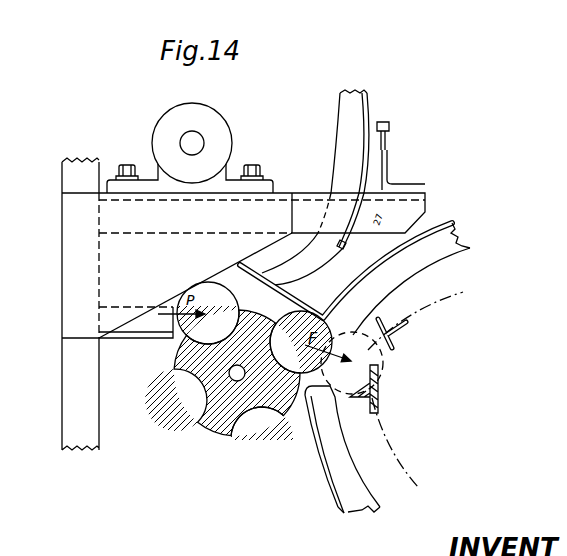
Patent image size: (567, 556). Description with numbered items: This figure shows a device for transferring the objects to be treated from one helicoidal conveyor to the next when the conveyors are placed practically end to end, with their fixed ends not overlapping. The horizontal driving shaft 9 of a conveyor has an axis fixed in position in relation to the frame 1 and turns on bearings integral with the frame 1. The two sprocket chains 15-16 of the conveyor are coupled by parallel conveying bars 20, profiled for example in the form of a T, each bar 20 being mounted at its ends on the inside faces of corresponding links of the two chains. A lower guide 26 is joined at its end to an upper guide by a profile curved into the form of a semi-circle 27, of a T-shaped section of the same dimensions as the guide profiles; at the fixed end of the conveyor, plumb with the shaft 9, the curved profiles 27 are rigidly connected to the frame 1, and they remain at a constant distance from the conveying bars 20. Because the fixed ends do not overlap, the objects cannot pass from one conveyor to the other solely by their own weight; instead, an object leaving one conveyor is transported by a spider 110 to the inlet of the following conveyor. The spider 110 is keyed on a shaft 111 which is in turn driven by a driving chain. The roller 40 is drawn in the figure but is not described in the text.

The frame 1 is at (60, 367).
The horizontal driving shaft 9 is at (200, 135).
The conveying bar 20 is at (400, 335).
The lower guide 26 is at (121, 341).
The curved profile 27 is at (373, 106).
The roller 40 is at (188, 335).
The spider 110 is at (260, 404).
The shaft 111 is at (232, 379).
The sprocket chains 15-16 is at (466, 291).